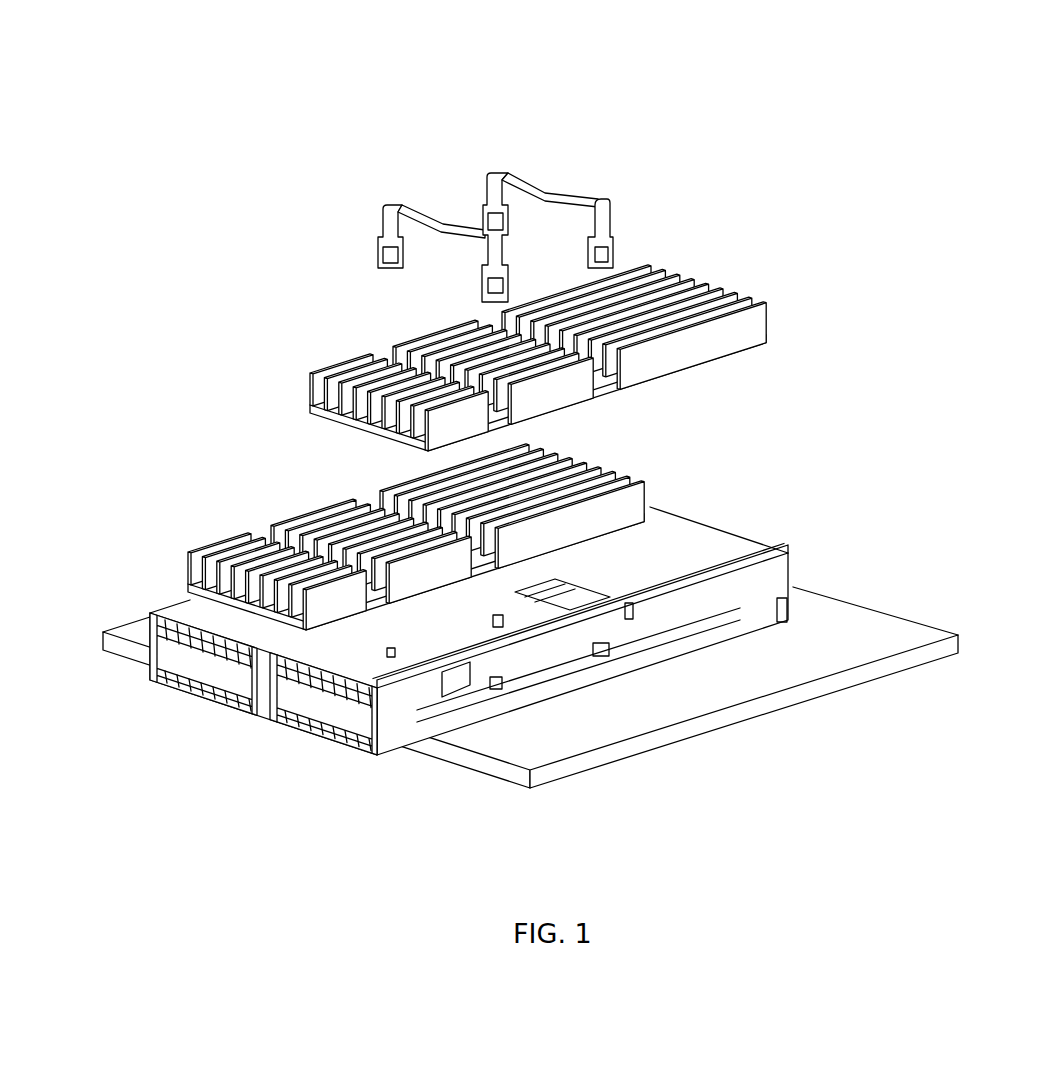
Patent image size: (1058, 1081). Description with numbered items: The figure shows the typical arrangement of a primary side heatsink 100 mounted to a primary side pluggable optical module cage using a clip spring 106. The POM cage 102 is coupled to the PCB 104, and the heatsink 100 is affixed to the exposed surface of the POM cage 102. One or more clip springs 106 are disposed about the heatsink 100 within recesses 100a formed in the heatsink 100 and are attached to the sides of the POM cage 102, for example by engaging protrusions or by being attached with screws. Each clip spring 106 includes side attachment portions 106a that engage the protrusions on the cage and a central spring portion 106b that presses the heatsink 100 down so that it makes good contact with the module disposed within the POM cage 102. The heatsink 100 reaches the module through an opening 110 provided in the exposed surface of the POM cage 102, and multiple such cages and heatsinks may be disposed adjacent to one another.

The heatsink 100 is at (461, 300).
The recesses of the heatsink 100a is at (378, 344).
The POM cage 102 is at (747, 535).
The PCB 104 is at (834, 695).
The clip spring 106 is at (502, 155).
The side attachment portions 106a is at (370, 232).
The central spring portion 106b is at (430, 208).
The opening 110 is at (417, 638).